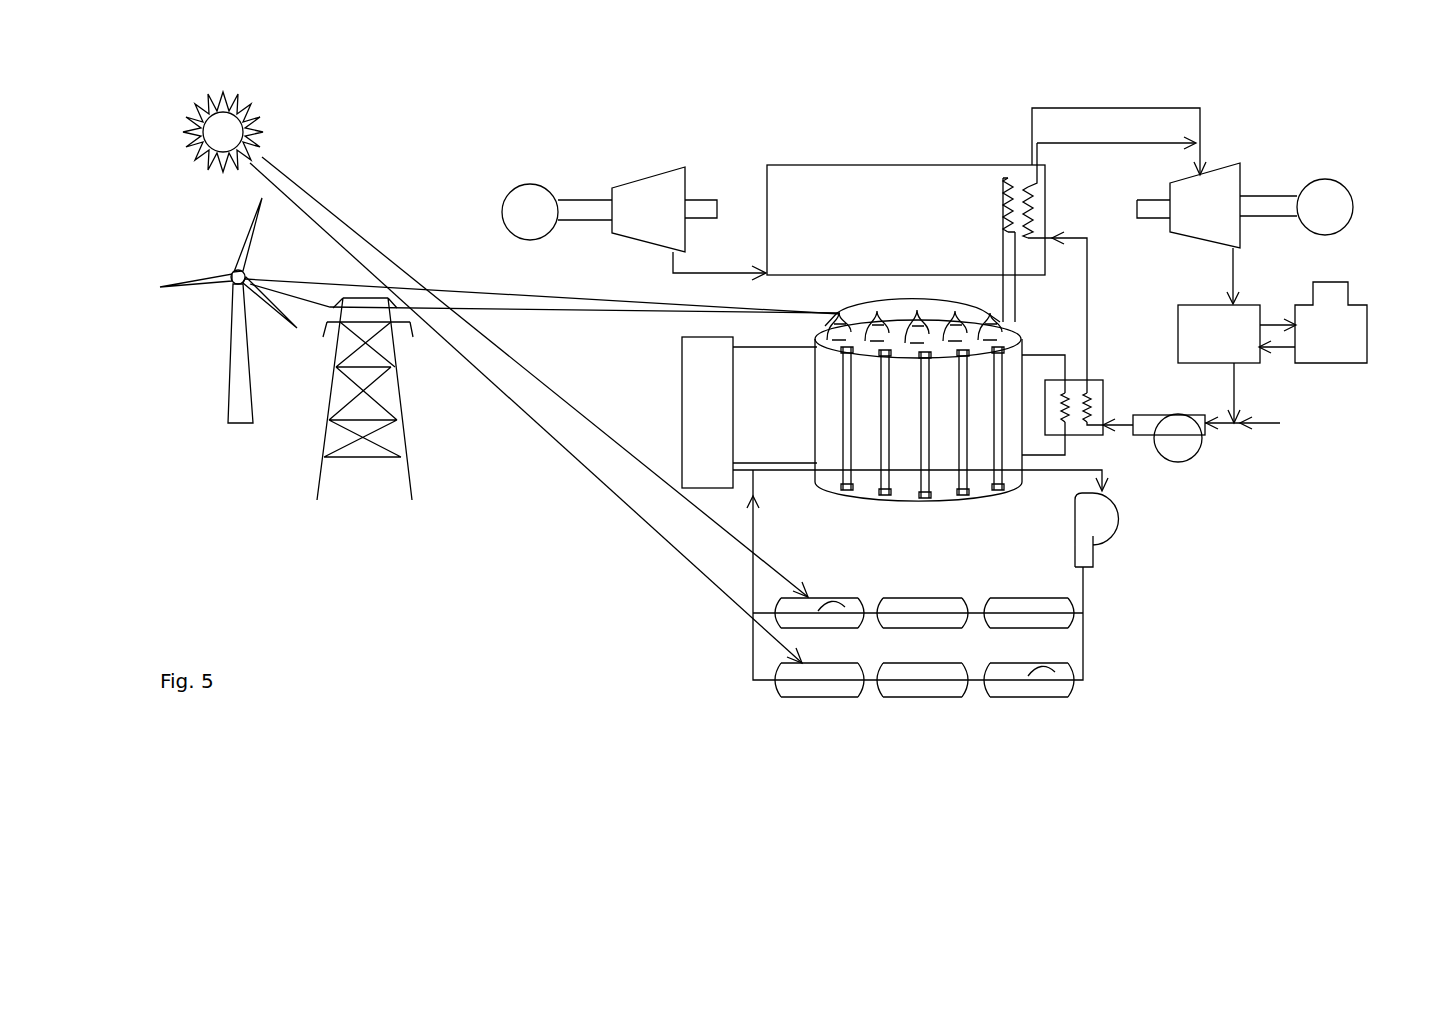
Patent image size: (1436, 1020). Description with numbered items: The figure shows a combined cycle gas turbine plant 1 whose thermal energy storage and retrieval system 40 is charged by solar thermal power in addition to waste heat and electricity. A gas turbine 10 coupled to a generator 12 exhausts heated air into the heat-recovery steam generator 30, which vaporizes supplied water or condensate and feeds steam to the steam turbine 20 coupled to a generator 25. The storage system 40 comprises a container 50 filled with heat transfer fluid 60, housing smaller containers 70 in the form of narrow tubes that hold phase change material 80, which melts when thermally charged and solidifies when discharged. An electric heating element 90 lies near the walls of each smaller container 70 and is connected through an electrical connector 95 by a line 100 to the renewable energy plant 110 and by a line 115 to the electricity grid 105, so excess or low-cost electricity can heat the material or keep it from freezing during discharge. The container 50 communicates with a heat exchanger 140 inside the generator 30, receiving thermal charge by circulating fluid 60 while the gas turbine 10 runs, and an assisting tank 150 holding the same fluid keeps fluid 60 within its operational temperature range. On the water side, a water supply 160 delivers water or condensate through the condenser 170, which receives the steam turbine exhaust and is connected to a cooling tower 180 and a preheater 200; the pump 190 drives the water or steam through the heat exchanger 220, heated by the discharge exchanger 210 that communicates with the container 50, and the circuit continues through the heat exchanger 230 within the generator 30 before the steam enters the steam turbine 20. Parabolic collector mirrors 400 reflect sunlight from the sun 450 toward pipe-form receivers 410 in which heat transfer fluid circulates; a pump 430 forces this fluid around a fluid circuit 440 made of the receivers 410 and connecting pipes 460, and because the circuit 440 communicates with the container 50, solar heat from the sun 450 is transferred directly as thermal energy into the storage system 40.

The combined cycle gas turbine plant 1 is at (852, 73).
The gas turbine 10 is at (650, 172).
The generator 12 is at (514, 184).
The steam turbine 20 is at (1236, 164).
The generator 25 is at (1345, 184).
The heat-recovery steam generator 30 is at (832, 164).
The thermal energy storage and retrieval system 40 is at (872, 310).
The container 50 is at (815, 357).
The heat transfer fluid 60 is at (824, 382).
The smaller container 70 is at (842, 386).
The phase change material 80 is at (846, 406).
The electric heating element 90 is at (846, 450).
The electrical connector 95 is at (840, 326).
The line 100 is at (604, 300).
The electricity grid 105 is at (395, 330).
The renewable energy plant 110 is at (232, 302).
The line 115 is at (590, 313).
The heat exchanger 140 is at (1008, 177).
The assisting tank 150 is at (682, 410).
The water supply 160 is at (1254, 422).
The condenser 170 is at (1196, 304).
The cooling tower 180 is at (1342, 282).
The pump 190 is at (1146, 414).
The preheater 200 is at (1094, 438).
The heat exchanger 210 is at (1065, 392).
The heat exchanger 220 is at (1092, 396).
The heat exchanger 230 is at (1038, 210).
The parabolic collector mirrors 400 is at (927, 622).
The receivers 410 is at (836, 600).
The pump 430 is at (1112, 522).
The fluid circuit 440 is at (755, 538).
The sun 450 is at (257, 101).
The connecting pipes 460 is at (917, 622).